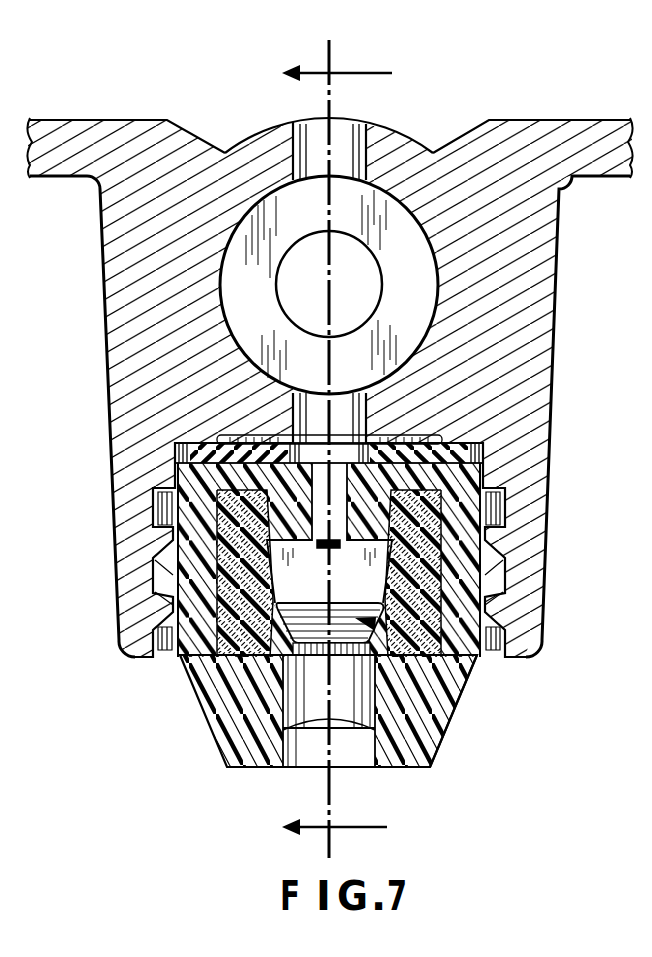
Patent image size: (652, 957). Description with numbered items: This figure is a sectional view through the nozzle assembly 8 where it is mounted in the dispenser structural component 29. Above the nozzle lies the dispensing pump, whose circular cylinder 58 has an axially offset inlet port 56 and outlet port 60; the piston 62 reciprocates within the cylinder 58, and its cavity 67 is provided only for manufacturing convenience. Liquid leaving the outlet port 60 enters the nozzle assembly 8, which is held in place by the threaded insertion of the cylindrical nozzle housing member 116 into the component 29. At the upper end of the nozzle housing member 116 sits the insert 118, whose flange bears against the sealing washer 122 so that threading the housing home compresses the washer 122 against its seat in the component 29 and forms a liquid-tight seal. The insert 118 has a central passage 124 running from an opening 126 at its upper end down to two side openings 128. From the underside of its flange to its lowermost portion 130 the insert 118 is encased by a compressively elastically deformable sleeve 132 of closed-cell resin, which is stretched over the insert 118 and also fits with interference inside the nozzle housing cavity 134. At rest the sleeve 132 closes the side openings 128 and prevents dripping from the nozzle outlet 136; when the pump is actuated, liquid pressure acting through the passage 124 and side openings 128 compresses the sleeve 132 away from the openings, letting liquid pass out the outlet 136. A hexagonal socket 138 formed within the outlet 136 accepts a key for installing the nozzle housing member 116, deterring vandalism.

The nozzle assembly 8 is at (72, 362).
The structural component 29 is at (108, 128).
The inlet port 56 is at (305, 147).
The cylinder 58 is at (218, 292).
The outlet port 60 is at (367, 400).
The piston 62 is at (392, 195).
The cavity 67 is at (363, 266).
The nozzle housing member 116 is at (208, 727).
The insert 118 is at (462, 683).
The sealing washer 122 is at (485, 456).
The passage 124 is at (336, 526).
The opening 126 is at (300, 440).
The side opening 128 is at (322, 590).
The lowermost portion 130 is at (283, 658).
The compressively elastically deformable sleeve 132 is at (213, 642).
The nozzle housing cavity 134 is at (478, 660).
The nozzle outlet 136 is at (340, 758).
The hexagonal socket 138 is at (345, 725).